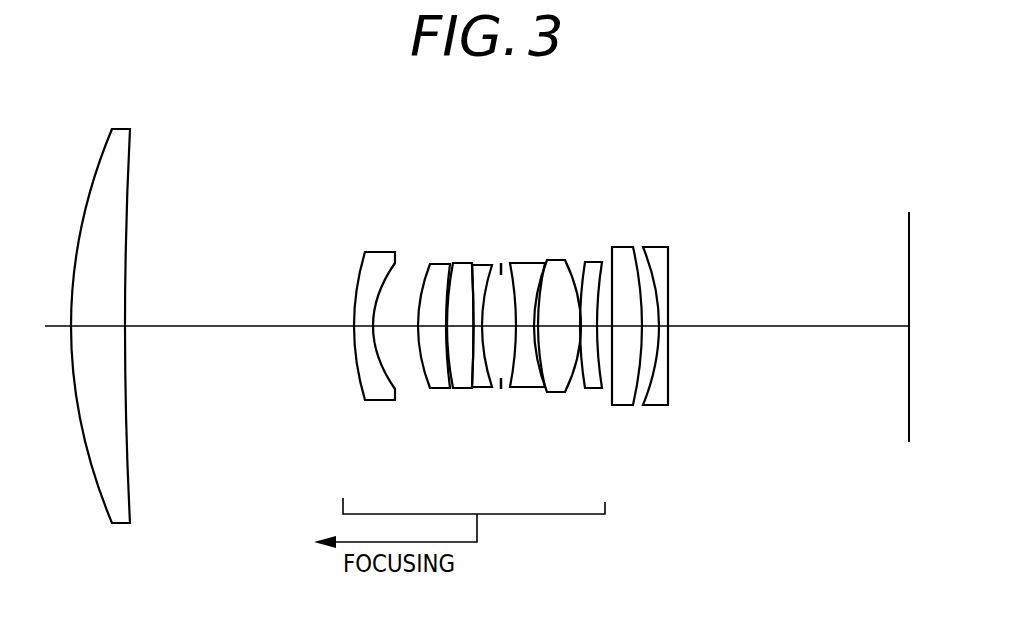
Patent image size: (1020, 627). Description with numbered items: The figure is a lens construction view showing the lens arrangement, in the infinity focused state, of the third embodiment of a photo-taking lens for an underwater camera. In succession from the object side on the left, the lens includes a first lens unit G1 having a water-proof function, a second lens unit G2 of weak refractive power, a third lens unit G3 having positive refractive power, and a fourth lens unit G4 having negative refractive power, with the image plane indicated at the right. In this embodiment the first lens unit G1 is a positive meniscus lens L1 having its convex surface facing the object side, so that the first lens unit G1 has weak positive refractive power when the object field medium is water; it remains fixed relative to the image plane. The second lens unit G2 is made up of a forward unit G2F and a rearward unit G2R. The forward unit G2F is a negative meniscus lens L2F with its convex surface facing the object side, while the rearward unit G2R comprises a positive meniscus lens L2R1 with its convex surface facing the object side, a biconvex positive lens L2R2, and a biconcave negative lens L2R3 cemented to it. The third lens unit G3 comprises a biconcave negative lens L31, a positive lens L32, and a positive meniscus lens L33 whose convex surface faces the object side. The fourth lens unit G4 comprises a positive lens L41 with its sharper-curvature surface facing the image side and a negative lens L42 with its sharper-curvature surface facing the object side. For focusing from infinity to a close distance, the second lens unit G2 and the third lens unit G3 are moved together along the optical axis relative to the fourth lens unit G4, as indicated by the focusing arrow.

The first lens unit G1 is at (146, 118).
The second lens unit G2 is at (488, 200).
The forward unit G2F is at (408, 243).
The rearward unit G2R is at (493, 243).
The third lens unit G3 is at (602, 244).
The fourth lens unit G4 is at (673, 244).
The positive meniscus lens L1 is at (117, 481).
The negative meniscus lens L2F is at (362, 366).
The positive meniscus lens L2R1 is at (435, 384).
The biconvex positive lens L2R2 is at (462, 384).
The biconcave negative lens L2R3 is at (480, 384).
The biconcave negative lens L31 is at (525, 388).
The positive lens L32 is at (557, 392).
The positive meniscus lens L33 is at (590, 388).
The positive lens L41 is at (622, 405).
The negative lens L42 is at (657, 405).